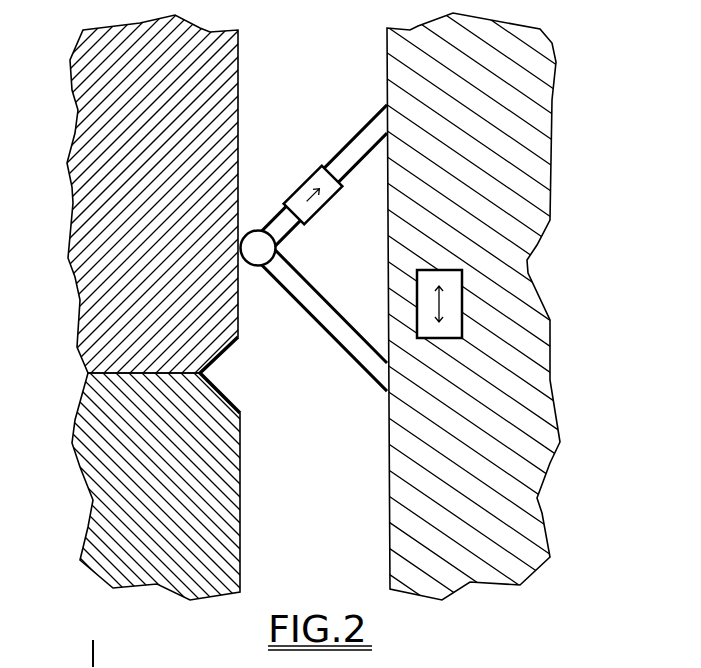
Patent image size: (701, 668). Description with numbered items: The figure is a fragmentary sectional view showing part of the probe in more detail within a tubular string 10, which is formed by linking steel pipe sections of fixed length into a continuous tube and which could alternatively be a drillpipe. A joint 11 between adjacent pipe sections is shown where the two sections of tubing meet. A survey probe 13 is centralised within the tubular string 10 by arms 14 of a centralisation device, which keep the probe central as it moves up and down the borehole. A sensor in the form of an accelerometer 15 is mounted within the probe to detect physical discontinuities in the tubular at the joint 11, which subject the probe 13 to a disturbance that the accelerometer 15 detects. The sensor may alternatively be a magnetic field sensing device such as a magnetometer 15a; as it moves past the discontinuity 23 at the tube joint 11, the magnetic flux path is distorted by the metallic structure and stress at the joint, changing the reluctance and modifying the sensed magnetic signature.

The tubular string 10 is at (240, 460).
The joint 11 is at (125, 372).
The survey probe 13 is at (397, 73).
The arm 14 is at (362, 133).
The accelerometer 15 is at (295, 188).
The magnetometer 15a is at (452, 303).
The discontinuity 23 is at (223, 397).